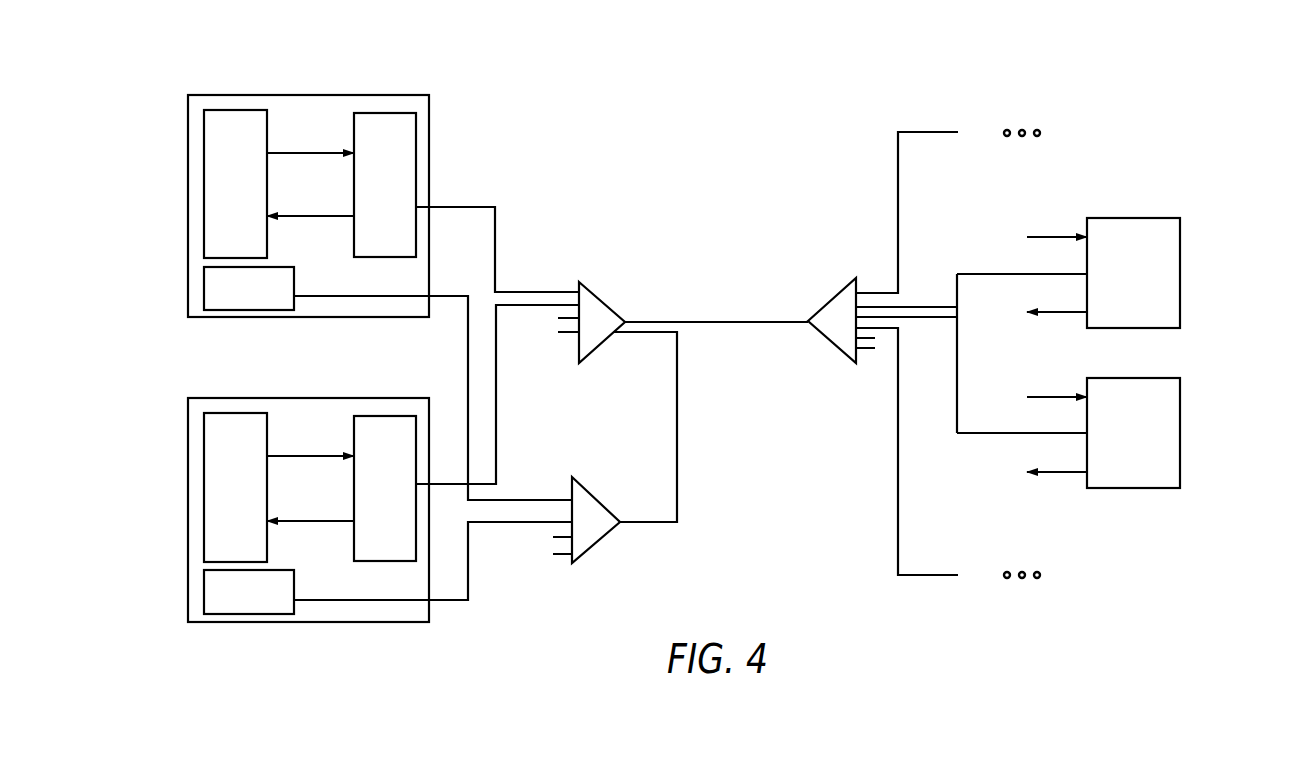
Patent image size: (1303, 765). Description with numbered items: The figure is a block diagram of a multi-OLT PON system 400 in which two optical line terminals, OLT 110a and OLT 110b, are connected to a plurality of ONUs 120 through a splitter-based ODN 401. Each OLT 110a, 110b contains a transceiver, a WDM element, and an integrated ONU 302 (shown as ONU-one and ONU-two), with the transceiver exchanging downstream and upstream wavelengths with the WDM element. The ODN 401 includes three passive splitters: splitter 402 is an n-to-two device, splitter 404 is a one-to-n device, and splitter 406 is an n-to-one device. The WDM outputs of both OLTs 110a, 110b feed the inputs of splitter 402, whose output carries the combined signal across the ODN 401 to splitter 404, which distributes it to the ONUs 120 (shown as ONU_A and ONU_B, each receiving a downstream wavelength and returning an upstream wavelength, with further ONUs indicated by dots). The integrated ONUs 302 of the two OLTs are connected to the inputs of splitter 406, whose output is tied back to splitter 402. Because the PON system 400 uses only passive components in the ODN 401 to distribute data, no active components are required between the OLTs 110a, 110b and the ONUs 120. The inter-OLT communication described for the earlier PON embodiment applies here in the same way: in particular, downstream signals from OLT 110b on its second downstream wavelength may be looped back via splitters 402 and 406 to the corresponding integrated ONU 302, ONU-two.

The PON system 400 is at (225, 37).
The OLT 110a is at (380, 95).
The OLT 110b is at (380, 398).
The integrated ONU 302 is at (294, 283).
The splitter-based ODN 401 is at (883, 197).
The splitter 402 is at (602, 342).
The splitter 404 is at (832, 343).
The splitter 406 is at (598, 541).
The ONU 120 is at (1180, 272).